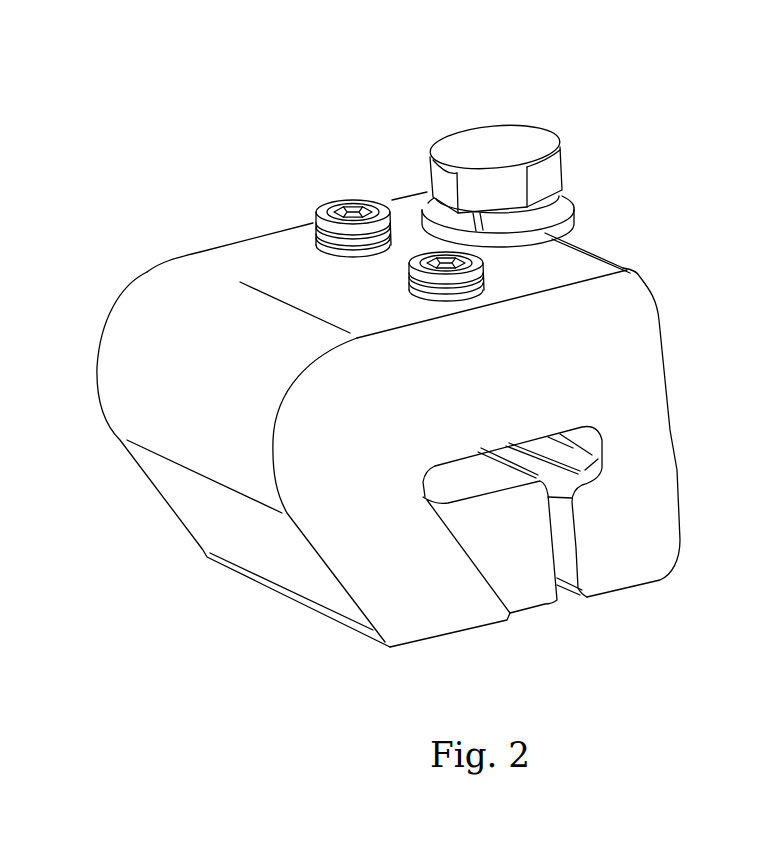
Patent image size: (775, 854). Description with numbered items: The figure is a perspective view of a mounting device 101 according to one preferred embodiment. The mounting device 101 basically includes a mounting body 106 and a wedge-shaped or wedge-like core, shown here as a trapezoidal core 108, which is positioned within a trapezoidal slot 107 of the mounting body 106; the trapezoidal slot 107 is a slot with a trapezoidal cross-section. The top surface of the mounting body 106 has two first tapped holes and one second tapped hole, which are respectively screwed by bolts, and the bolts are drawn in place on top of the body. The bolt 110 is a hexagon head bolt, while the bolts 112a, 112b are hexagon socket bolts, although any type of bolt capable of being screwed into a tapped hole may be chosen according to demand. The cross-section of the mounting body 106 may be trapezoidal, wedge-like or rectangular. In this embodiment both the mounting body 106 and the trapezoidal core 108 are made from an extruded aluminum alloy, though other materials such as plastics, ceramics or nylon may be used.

The mounting device 101 is at (556, 64).
The mounting body 106 is at (138, 258).
The trapezoidal slot 107 is at (580, 467).
The trapezoidal core 108 is at (536, 616).
The hexagon head bolt 110 is at (558, 124).
The hexagon socket bolt 112a is at (348, 185).
The hexagon socket bolt 112b is at (485, 295).